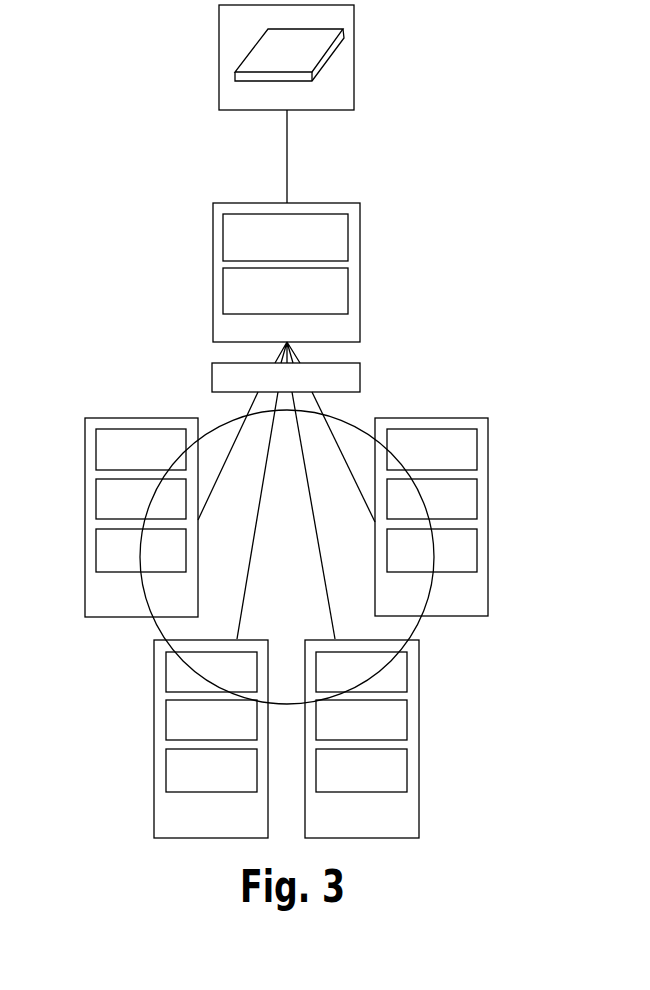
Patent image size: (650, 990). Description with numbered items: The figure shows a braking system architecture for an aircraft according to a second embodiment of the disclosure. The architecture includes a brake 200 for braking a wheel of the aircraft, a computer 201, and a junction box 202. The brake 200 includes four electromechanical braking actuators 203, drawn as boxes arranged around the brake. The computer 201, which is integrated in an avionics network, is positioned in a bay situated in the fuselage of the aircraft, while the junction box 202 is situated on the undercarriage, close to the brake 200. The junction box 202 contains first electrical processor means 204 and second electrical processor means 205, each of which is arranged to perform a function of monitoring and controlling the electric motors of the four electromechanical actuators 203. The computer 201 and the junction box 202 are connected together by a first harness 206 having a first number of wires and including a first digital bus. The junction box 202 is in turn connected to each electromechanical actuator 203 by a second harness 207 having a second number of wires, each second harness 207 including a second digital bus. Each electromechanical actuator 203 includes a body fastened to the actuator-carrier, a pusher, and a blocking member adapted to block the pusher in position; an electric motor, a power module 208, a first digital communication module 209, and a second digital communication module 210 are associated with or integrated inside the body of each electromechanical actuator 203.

The brake 200 is at (355, 427).
The computer 201 is at (355, 78).
The junction box 202 is at (331, 253).
The electromechanical braking actuator 203 is at (279, 597).
The first electrical processor means 204 is at (348, 238).
The second electrical processor means 205 is at (348, 290).
The first harness 206 is at (287, 163).
The second harness 207 is at (235, 440).
The power module 208 is at (96, 538).
The first digital communication module 209 is at (96, 512).
The second digital communication module 210 is at (96, 448).